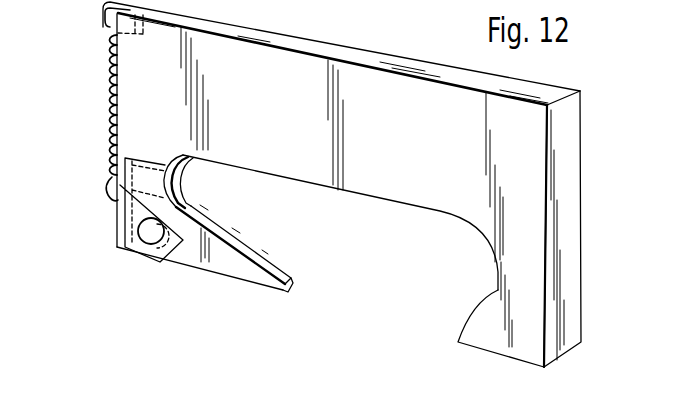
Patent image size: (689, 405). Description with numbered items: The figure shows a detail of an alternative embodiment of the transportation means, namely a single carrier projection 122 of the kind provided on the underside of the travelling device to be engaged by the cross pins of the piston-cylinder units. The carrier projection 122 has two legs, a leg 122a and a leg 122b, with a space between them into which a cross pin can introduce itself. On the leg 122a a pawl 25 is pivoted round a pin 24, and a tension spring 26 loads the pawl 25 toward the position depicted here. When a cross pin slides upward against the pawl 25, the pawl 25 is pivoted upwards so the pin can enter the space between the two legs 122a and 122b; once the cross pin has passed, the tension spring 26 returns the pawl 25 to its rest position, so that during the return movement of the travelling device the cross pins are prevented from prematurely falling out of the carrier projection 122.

The carrier projection 122 is at (350, 72).
The leg 122a is at (118, 230).
The leg 122b is at (488, 340).
The pin 24 is at (148, 232).
The pawl 25 is at (242, 267).
The tension spring 26 is at (102, 88).